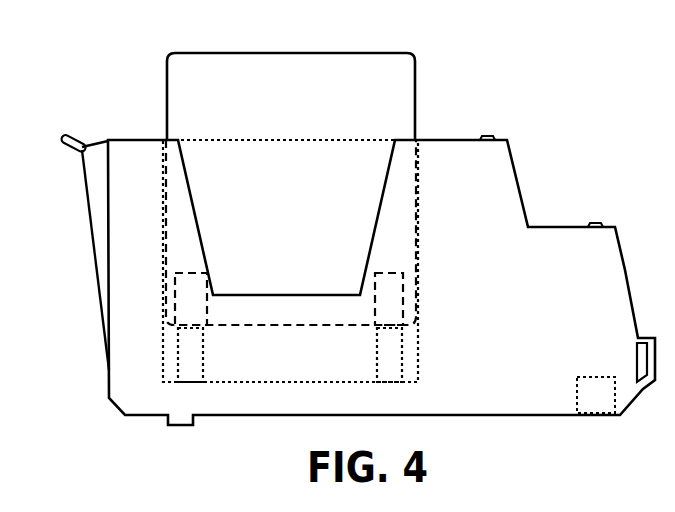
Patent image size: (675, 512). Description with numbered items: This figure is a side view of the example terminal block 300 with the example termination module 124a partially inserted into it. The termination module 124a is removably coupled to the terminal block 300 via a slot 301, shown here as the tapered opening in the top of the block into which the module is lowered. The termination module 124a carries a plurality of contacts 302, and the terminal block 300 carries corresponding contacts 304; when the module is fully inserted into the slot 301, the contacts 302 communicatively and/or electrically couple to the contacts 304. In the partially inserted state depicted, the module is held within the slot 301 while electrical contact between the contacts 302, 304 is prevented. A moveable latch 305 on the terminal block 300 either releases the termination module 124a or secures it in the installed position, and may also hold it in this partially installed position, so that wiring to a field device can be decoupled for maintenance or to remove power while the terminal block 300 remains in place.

The termination module 124a is at (403, 88).
The terminal block 300 is at (505, 167).
The slot 301 is at (232, 158).
The contacts 302 is at (194, 287).
The contacts 304 is at (194, 347).
The moveable latch 305 is at (86, 168).